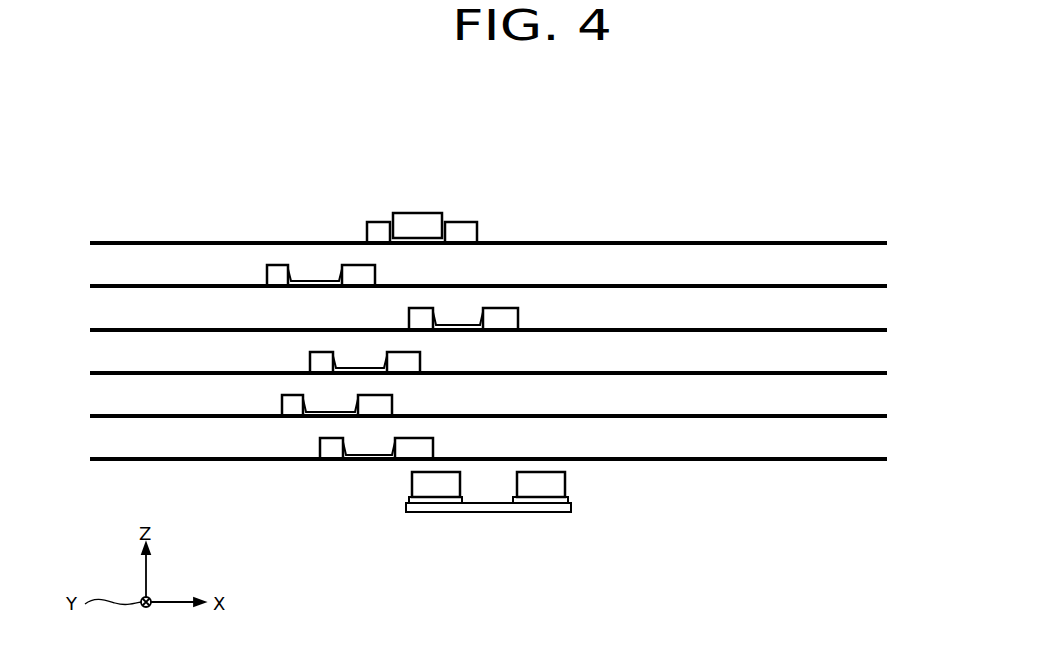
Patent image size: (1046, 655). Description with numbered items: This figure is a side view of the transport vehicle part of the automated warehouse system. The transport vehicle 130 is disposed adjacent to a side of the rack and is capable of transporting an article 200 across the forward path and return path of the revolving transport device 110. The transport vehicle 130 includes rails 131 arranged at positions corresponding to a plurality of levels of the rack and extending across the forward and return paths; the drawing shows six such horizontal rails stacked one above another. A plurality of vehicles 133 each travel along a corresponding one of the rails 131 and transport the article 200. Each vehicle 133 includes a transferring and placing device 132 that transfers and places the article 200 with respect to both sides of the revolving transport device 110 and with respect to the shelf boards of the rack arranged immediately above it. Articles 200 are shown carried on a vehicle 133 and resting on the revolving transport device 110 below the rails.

The revolving transport device 110 is at (485, 513).
The transport vehicle 130 is at (488, 261).
The rail 131 is at (597, 241).
The transferring and placing device 132 is at (289, 265).
The vehicle 133 is at (463, 221).
The article 200 is at (415, 212).